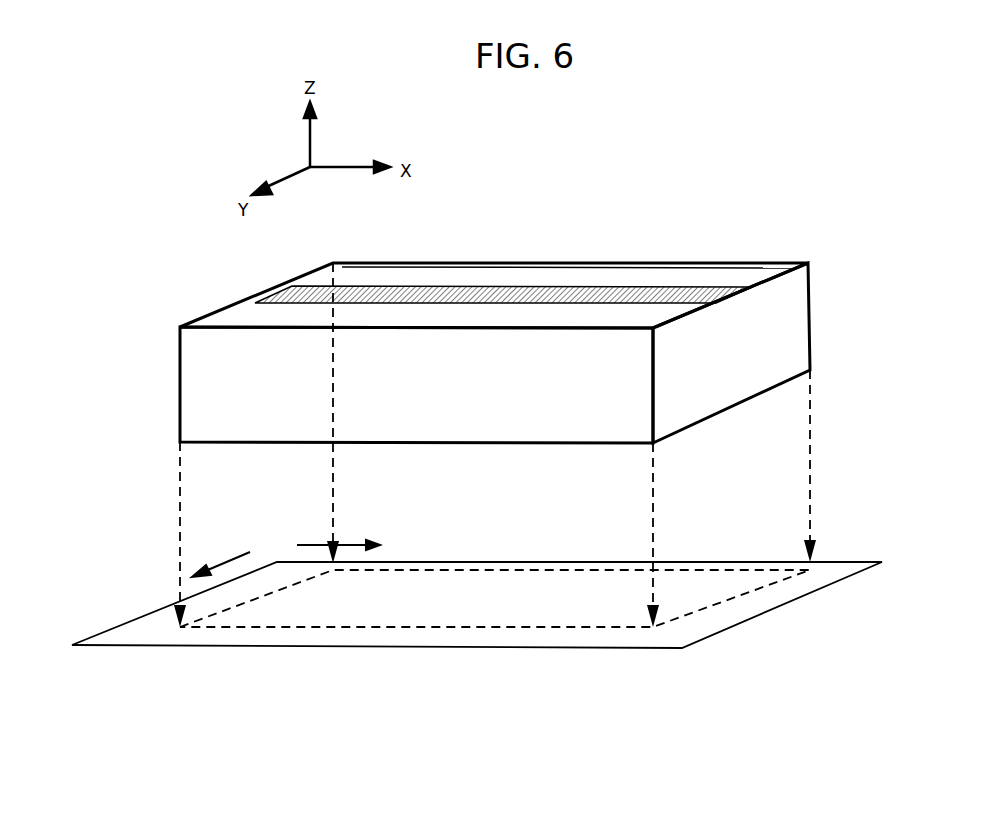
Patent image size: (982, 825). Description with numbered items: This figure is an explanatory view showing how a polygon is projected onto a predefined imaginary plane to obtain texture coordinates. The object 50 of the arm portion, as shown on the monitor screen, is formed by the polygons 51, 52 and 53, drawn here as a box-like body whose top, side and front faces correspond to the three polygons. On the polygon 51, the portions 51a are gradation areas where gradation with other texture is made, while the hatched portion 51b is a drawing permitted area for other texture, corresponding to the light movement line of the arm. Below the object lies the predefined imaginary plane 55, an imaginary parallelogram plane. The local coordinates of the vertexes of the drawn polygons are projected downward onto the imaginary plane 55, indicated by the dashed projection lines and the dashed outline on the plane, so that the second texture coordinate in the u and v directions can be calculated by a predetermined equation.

The object 50 is at (495, 351).
The polygon 51 is at (494, 262).
The gradation areas 51a is at (637, 315).
The drawing permitted area 51b is at (622, 300).
The polygon 52 is at (758, 382).
The polygon 53 is at (385, 448).
The imaginary plane 55 is at (470, 647).